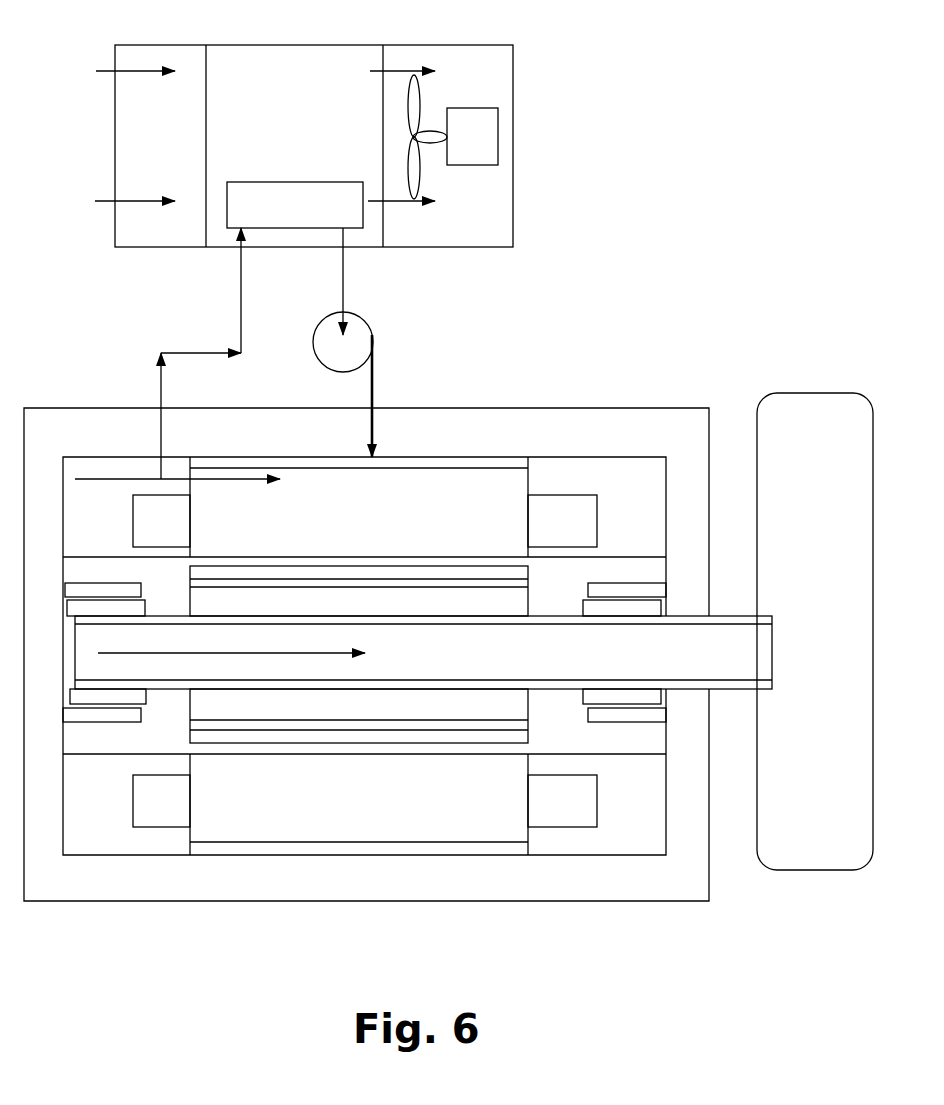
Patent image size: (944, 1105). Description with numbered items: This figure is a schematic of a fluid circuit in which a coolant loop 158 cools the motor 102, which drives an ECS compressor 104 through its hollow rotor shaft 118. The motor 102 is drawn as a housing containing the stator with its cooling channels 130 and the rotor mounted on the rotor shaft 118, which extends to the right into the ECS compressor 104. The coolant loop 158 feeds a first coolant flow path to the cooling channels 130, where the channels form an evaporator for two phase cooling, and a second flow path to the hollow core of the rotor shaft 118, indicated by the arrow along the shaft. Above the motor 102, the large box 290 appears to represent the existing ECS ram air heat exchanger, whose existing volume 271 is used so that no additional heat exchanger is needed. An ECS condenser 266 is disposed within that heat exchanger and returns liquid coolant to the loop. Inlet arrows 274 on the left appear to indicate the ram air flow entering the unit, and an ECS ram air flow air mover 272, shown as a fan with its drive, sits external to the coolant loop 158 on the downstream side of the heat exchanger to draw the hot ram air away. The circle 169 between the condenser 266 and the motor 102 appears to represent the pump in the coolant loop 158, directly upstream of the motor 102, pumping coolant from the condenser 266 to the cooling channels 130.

The cooling unit 290 is at (237, 45).
The air inlet flow 274 is at (106, 69).
The ECS ram air flow air mover 272 is at (457, 108).
The ECS condenser 266 is at (268, 221).
The existing volume 271 is at (373, 228).
The coolant loop 158 is at (209, 352).
The pump 169 is at (373, 338).
The motor 102 is at (88, 408).
The cooling channels 130 is at (321, 480).
The rotor shaft 118 is at (727, 632).
The ECS compressor 104 is at (815, 631).